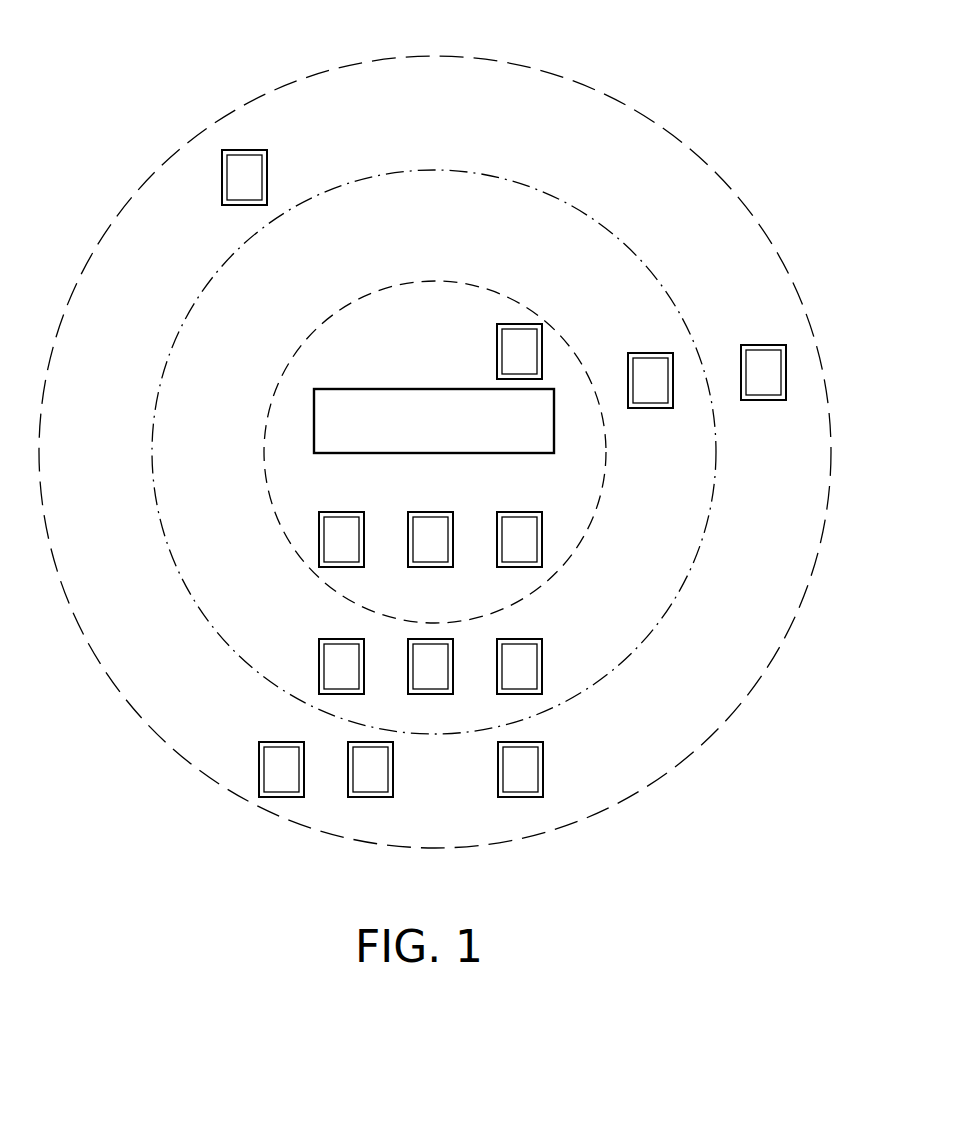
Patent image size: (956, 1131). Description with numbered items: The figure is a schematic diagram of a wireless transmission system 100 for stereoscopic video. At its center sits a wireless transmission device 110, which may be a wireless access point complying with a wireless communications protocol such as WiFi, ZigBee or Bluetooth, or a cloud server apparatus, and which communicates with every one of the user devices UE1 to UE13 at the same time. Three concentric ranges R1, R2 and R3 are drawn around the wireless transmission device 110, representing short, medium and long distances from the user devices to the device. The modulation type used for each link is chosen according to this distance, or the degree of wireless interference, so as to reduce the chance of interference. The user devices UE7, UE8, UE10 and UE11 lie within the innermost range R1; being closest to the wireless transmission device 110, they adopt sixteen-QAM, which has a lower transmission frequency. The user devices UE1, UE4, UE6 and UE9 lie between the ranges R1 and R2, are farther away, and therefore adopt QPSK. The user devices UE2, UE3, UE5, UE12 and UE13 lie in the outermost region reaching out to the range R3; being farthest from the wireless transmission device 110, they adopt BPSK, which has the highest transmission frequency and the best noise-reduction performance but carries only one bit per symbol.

The wireless transmission system 100 is at (757, 859).
The wireless transmission device 110 is at (410, 389).
The range R1 is at (432, 282).
The range R2 is at (568, 200).
The range R3 is at (212, 125).
The user device UE1 is at (319, 665).
The user device UE2 is at (267, 178).
The user device UE3 is at (282, 742).
The user device UE4 is at (430, 694).
The user device UE5 is at (393, 770).
The user device UE6 is at (542, 665).
The user device UE7 is at (345, 512).
The user device UE8 is at (434, 512).
The user device UE9 is at (650, 353).
The user device UE10 is at (521, 512).
The user device UE11 is at (497, 352).
The user device UE12 is at (543, 770).
The user device UE13 is at (760, 345).